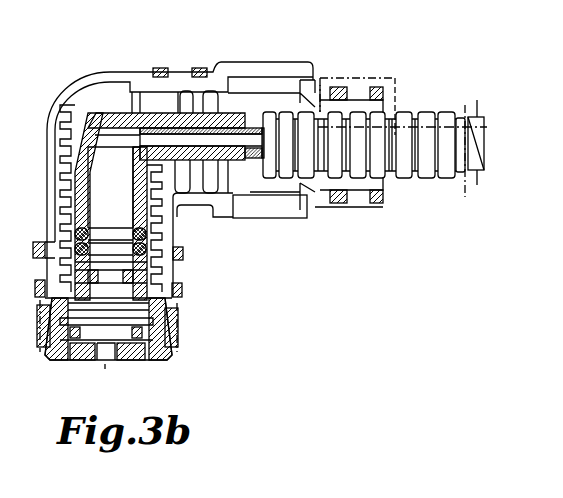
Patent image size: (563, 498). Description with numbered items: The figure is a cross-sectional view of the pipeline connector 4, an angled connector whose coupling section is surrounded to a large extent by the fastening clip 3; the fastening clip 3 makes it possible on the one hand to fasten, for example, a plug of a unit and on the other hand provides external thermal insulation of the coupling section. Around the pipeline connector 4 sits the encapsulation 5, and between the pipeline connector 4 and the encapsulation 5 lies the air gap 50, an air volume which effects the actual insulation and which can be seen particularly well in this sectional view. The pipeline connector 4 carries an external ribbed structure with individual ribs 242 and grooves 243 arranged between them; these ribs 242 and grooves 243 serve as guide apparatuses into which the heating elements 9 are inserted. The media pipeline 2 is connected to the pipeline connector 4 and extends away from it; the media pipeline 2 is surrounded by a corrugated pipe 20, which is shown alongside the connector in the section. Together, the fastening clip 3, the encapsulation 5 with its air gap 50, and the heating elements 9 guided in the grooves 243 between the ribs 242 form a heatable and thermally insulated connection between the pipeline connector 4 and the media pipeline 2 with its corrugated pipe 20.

The air gap 50 is at (104, 94).
The pipeline connector 4 is at (78, 112).
The heating element 9 is at (155, 221).
The media pipeline 2 is at (229, 195).
The encapsulation 5 is at (283, 216).
The corrugated pipe 20 is at (426, 178).
The rib 242 is at (165, 248).
The groove 243 is at (168, 276).
The fastening clip 3 is at (178, 331).